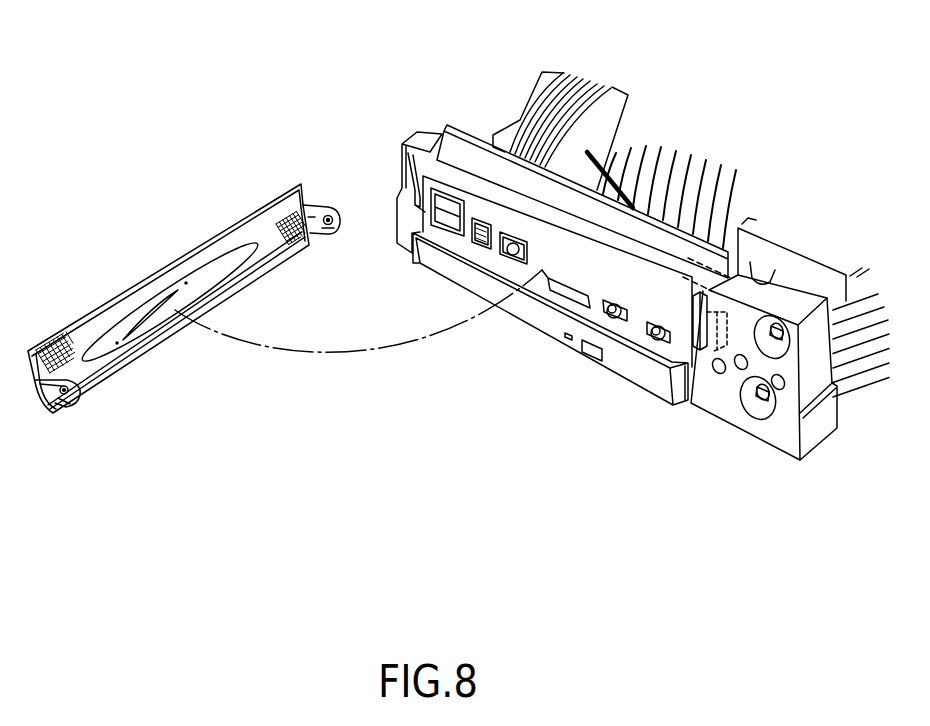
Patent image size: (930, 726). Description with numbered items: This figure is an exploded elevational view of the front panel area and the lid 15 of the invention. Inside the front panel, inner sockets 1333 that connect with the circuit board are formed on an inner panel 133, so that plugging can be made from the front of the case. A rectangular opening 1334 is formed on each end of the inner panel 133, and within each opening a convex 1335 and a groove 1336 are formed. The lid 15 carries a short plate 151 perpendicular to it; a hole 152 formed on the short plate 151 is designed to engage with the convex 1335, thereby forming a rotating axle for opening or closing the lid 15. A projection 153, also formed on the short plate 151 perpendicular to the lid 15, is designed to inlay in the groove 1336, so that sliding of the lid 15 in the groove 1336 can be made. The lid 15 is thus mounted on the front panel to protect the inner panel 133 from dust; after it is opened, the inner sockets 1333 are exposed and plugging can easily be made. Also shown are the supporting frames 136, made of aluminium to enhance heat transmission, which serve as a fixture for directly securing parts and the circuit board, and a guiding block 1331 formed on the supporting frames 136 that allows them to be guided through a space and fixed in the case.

The lid 15 is at (147, 277).
The short plate 151 is at (312, 217).
The hole 152 is at (331, 215).
The projection 153 is at (331, 237).
The inner panel 133 is at (802, 388).
The guiding block 1331 is at (814, 440).
The inner sockets 1333 is at (558, 253).
The rectangular opening 1334 is at (418, 210).
The convex 1335 is at (428, 167).
The groove 1336 is at (402, 147).
The supporting frames 136 is at (857, 392).